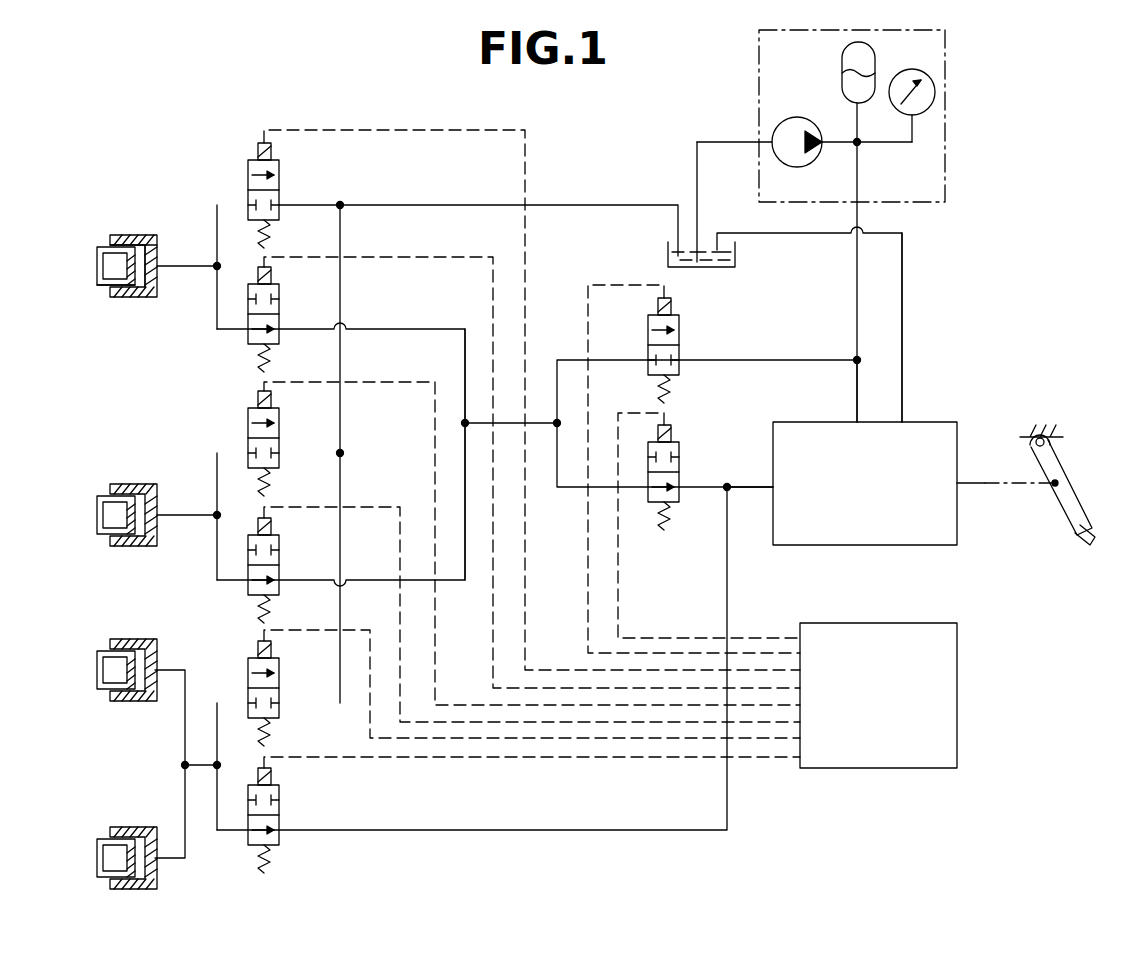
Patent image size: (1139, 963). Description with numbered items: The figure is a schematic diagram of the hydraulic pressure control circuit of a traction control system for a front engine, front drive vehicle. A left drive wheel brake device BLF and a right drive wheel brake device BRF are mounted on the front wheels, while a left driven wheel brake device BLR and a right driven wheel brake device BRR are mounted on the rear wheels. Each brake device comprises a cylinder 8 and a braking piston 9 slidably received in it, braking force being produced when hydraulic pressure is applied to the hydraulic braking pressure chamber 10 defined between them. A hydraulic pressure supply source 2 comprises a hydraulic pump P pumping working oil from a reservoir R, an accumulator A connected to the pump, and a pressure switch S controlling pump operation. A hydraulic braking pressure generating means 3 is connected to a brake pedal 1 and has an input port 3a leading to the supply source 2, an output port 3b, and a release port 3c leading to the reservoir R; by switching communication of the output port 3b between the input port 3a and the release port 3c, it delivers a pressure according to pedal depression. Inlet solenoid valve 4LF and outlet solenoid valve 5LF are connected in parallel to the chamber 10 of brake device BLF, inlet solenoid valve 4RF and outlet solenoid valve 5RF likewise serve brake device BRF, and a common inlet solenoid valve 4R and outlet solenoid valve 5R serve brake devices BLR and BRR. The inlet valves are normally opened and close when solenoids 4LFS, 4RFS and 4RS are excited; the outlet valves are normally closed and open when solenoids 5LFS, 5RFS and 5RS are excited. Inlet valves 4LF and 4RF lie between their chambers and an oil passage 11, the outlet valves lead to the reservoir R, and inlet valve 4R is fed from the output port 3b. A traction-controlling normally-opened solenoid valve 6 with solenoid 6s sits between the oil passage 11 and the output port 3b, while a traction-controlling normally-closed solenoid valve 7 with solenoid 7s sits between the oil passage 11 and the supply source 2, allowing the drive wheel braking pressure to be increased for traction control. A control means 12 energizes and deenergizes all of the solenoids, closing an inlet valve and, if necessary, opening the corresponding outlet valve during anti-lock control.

The brake pedal 1 is at (1093, 533).
The hydraulic pressure supply source 2 is at (945, 110).
The hydraulic braking pressure generating means 3 is at (871, 496).
The input port 3a is at (852, 414).
The output port 3b is at (770, 487).
The release port 3c is at (903, 420).
The inlet solenoid valve 4LF is at (252, 347).
The solenoid 4LFS is at (272, 275).
The inlet solenoid valve 4RF is at (252, 595).
The solenoid 4RFS is at (272, 527).
The inlet solenoid valve 4R is at (277, 845).
The solenoid 4RS is at (272, 772).
The outlet solenoid valve 5LF is at (249, 172).
The solenoid 5LFS is at (272, 150).
The outlet solenoid valve 5RF is at (248, 428).
The solenoid 5RFS is at (272, 396).
The outlet solenoid valve 5R is at (280, 715).
The solenoid 5RS is at (272, 650).
The traction-controlling normally-opened solenoid valve 6 is at (679, 497).
The solenoid 6s is at (672, 427).
The traction-controlling normally-closed solenoid valve 7 is at (679, 333).
The solenoid 7s is at (655, 300).
The cylinder 8 is at (130, 240).
The braking piston 9 is at (103, 290).
The hydraulic braking pressure chamber 10 is at (155, 250).
The oil passage 11 is at (465, 358).
The control means 12 is at (886, 714).
The left drive wheel brake device BLF is at (101, 238).
The right drive wheel brake device BRF is at (112, 483).
The left driven wheel brake device BLR is at (103, 645).
The right driven wheel brake device BRR is at (87, 847).
The hydraulic pump P is at (798, 116).
The accumulator A is at (874, 53).
The pressure switch S is at (922, 117).
The reservoir R is at (667, 257).